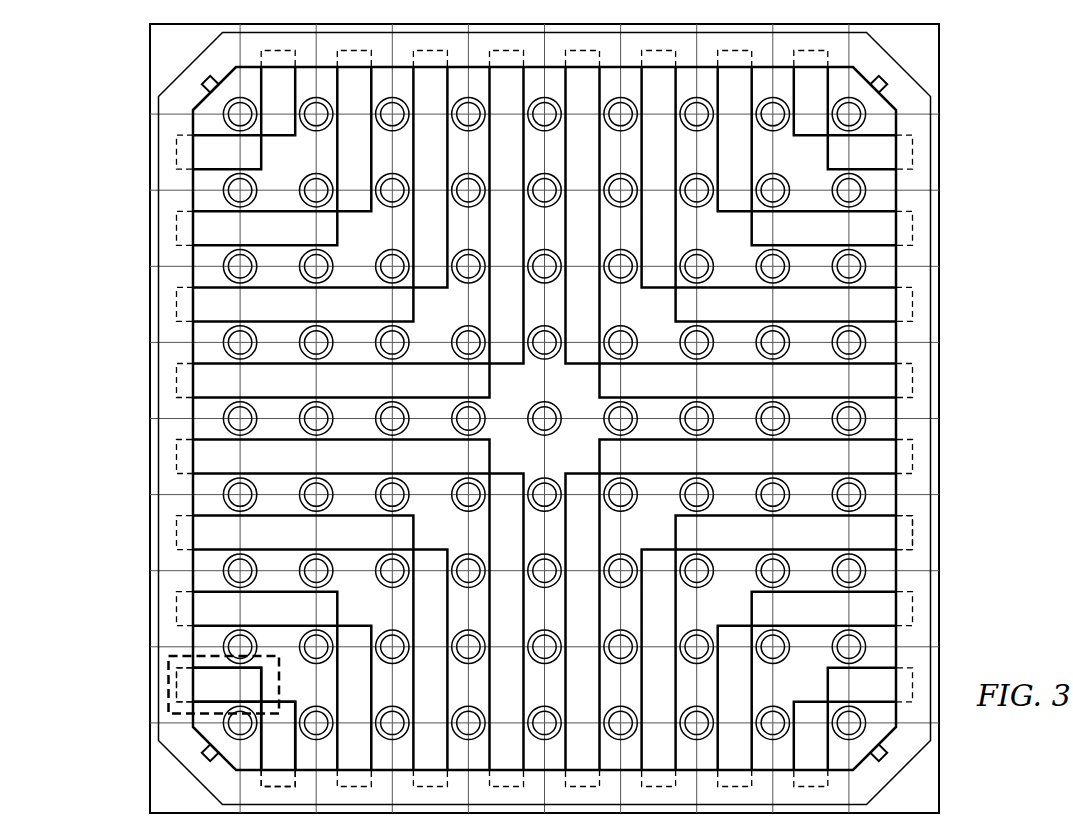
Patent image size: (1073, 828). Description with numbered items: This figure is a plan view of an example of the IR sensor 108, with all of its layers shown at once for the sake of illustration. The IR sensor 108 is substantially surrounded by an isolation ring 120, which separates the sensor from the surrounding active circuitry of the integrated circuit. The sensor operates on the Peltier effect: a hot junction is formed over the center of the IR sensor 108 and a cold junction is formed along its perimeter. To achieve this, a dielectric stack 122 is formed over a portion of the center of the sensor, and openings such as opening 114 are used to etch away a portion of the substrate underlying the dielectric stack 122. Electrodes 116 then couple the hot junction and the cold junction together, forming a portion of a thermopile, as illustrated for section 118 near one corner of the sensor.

The IR sensor 108 is at (969, 221).
The opening 114 is at (234, 728).
The electrodes 116 is at (192, 683).
The section 118 is at (206, 655).
The isolation ring 120 is at (920, 556).
The dielectric stack 122 is at (240, 686).